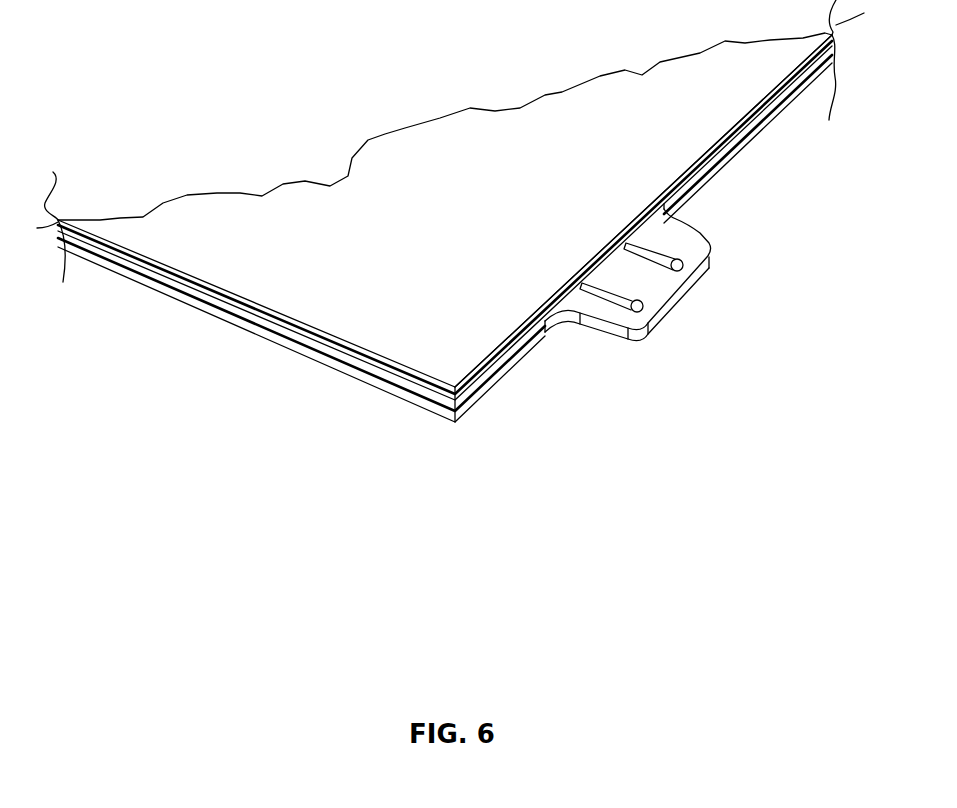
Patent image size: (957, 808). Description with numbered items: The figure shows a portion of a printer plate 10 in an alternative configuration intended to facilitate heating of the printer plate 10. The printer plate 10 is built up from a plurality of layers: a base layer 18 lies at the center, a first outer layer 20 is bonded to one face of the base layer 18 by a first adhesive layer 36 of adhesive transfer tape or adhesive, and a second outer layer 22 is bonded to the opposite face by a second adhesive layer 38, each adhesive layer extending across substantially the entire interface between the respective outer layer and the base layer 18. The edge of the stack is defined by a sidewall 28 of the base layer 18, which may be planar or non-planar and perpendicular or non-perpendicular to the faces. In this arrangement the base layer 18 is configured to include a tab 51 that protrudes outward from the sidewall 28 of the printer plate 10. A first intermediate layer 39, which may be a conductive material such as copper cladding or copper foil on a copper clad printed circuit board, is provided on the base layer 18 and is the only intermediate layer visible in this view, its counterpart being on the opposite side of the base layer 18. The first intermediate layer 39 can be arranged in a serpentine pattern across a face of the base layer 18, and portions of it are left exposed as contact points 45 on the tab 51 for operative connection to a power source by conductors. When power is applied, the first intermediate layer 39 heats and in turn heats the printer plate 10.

The printer plate 10 is at (450, 234).
The first outer layer 20 is at (341, 203).
The first adhesive layer 36 is at (250, 304).
The second adhesive layer 38 is at (265, 332).
The base layer 18 is at (343, 357).
The second outer layer 22 is at (386, 402).
The sidewall 28 is at (546, 380).
The tab 51 is at (667, 306).
The contact points 45 is at (684, 256).
The first intermediate layer 39 is at (658, 265).